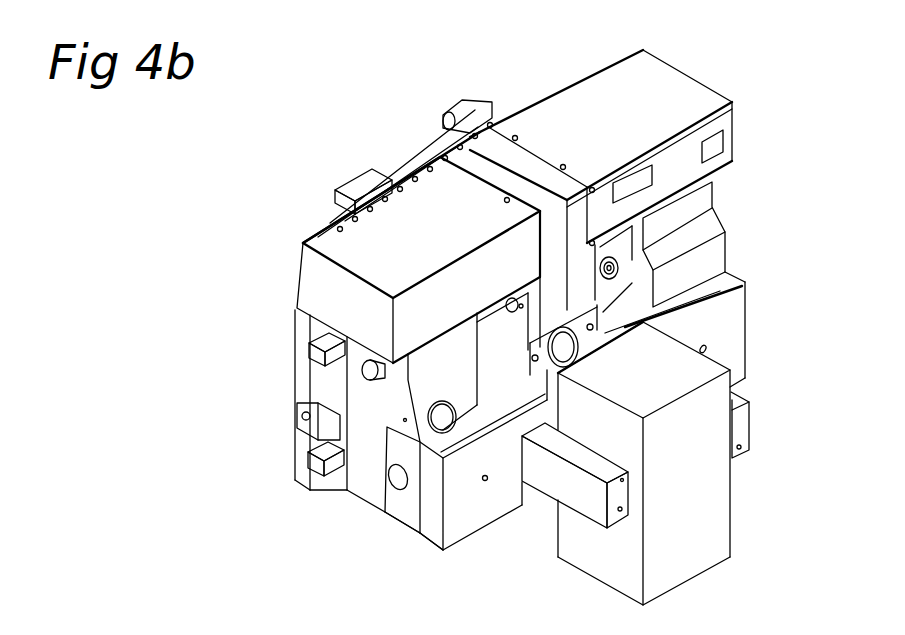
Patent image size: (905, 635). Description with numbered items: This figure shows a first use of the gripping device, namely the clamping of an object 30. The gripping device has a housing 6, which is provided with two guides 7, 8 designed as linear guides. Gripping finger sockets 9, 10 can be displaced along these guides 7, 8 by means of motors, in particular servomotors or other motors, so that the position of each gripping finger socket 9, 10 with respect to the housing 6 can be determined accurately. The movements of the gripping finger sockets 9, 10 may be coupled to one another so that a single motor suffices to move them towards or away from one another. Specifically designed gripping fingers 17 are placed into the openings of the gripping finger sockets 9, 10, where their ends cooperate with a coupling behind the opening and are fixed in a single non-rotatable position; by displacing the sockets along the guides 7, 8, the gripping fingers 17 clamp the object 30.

The housing 6 is at (578, 97).
The guide 7 is at (308, 345).
The guide 8 is at (310, 462).
The gripping finger socket 9 is at (405, 507).
The gripping finger socket 10 is at (737, 280).
The gripping finger 17 is at (558, 491).
The object 30 is at (700, 523).